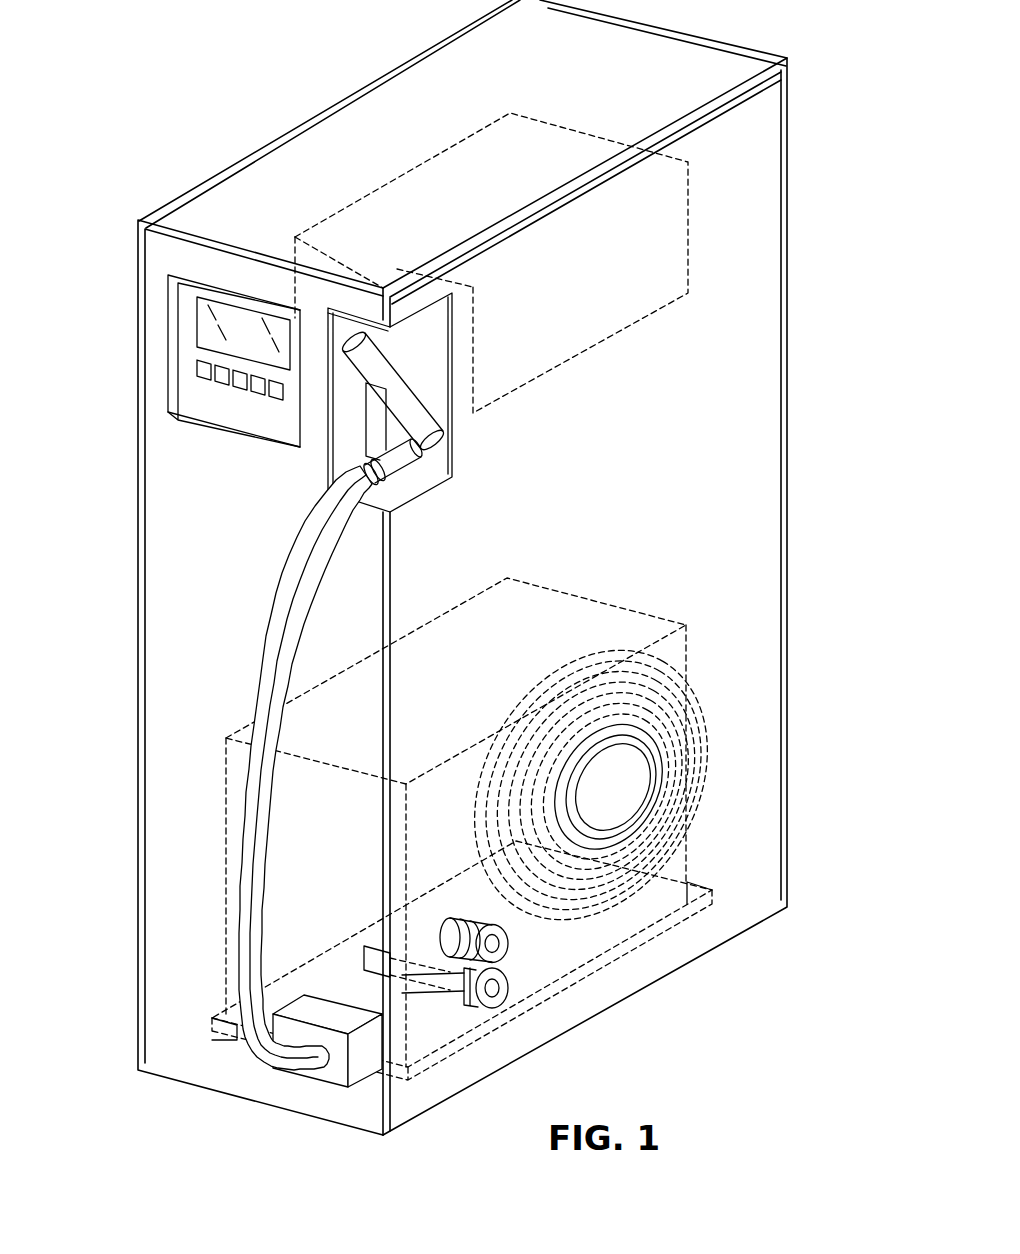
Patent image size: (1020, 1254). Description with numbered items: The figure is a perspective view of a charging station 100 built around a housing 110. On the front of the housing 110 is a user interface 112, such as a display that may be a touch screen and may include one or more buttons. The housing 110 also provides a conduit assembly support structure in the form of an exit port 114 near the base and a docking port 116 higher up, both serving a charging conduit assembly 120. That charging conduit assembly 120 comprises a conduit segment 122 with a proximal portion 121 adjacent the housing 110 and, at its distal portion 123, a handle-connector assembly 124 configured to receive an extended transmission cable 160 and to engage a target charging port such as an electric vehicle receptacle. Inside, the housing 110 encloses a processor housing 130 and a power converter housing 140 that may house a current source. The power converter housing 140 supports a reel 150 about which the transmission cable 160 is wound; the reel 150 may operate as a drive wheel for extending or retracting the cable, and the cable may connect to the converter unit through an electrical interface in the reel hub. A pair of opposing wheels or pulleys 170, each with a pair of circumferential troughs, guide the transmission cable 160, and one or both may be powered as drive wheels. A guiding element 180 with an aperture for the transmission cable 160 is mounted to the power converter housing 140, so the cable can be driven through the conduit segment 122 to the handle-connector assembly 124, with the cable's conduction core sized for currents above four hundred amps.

The charging station 100 is at (450, 589).
The housing 110 is at (790, 168).
The user interface 112 is at (170, 361).
The exit port 114 is at (291, 1086).
The docking port 116 is at (430, 402).
The charging conduit assembly 120 is at (213, 768).
The proximal portion 121 is at (207, 999).
The conduit segment 122 is at (265, 670).
The distal portion 123 is at (293, 493).
The handle-connector assembly 124 is at (343, 413).
The processor housing 130 is at (495, 267).
The power converter housing 140 is at (456, 783).
The reel 150 is at (612, 793).
The transmission cable 160 is at (570, 974).
The pulleys 170 is at (462, 966).
The guiding element 180 is at (377, 897).